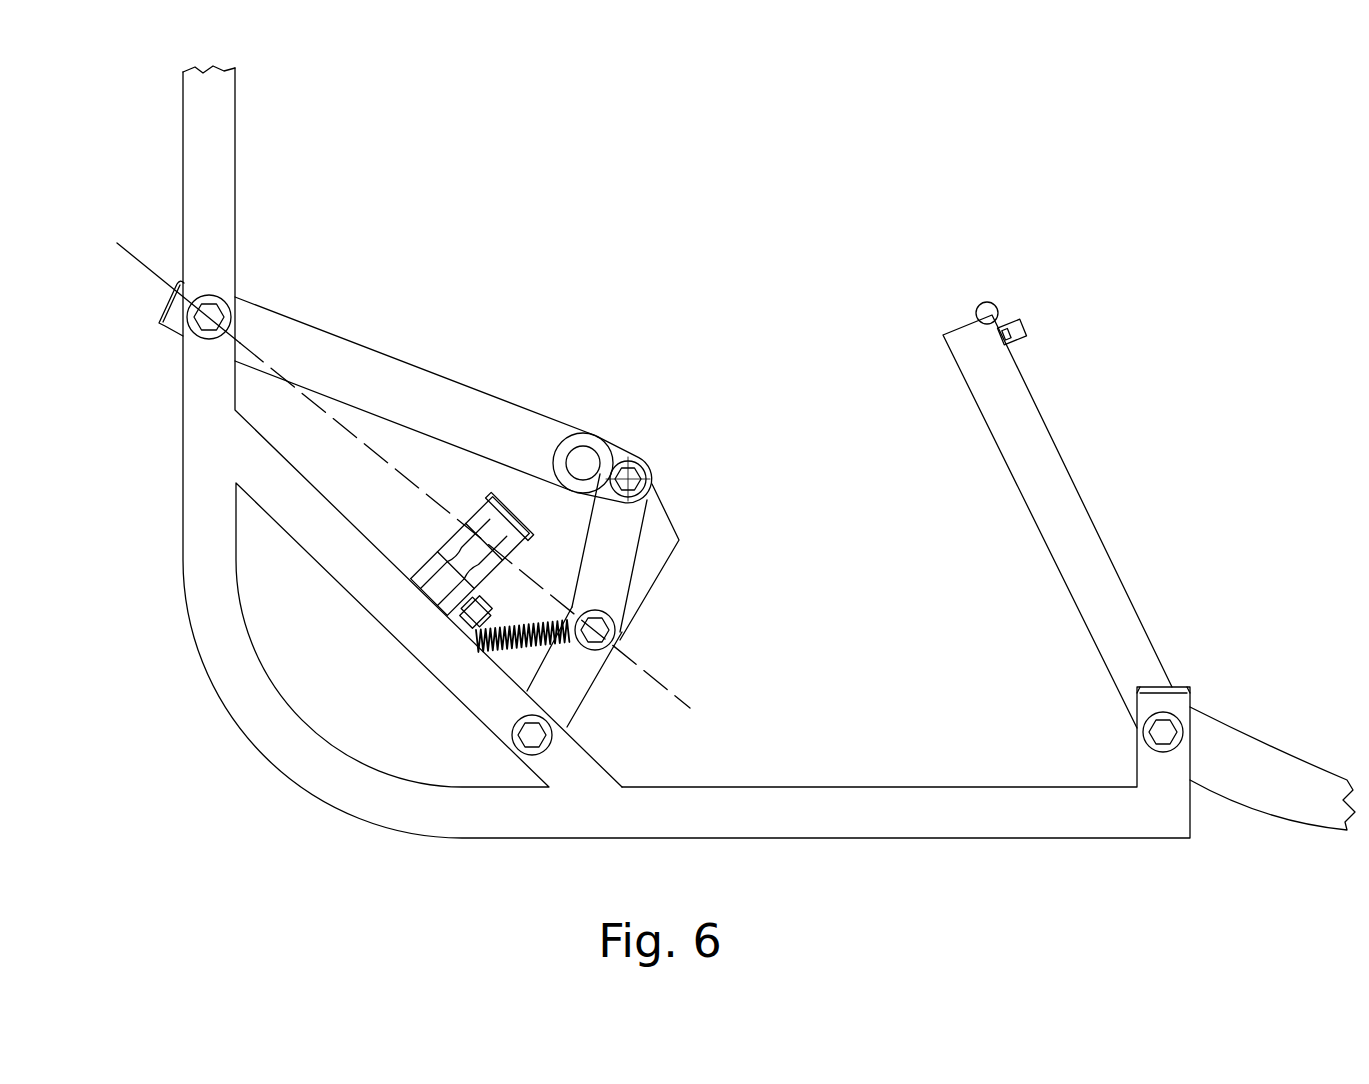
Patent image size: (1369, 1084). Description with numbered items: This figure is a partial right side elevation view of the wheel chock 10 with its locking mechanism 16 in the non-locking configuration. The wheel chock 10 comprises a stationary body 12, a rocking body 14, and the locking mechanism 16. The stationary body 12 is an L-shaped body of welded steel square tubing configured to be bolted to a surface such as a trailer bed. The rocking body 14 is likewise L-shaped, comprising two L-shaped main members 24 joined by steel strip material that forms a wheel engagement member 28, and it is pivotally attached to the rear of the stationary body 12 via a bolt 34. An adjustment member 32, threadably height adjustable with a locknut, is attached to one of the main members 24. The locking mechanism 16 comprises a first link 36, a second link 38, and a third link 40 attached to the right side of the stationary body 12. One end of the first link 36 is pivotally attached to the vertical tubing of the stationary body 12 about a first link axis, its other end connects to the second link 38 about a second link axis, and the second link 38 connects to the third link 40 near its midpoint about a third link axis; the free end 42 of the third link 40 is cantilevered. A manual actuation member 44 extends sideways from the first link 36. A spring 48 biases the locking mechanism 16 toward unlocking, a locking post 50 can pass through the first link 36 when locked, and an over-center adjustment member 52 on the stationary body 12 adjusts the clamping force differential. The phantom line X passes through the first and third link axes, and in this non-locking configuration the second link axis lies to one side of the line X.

The wheel chock 10 is at (795, 163).
The stationary body 12 is at (250, 718).
The rocking body 14 is at (1088, 521).
The main members 24 is at (1058, 490).
The locking mechanism 16 is at (695, 562).
The second link 38 is at (617, 577).
The wheel engagement member 28 is at (990, 302).
The adjustment member 32 is at (1020, 325).
The bolt 34 is at (1163, 732).
The first link 36 is at (375, 365).
The third link 40 is at (575, 692).
The free end 42 is at (663, 521).
The manual actuation member 44 is at (563, 432).
The spring 48 is at (545, 628).
The locking posts 50 is at (450, 568).
The over-center adjustment member 52 is at (463, 600).
The phantom line X is at (140, 262).